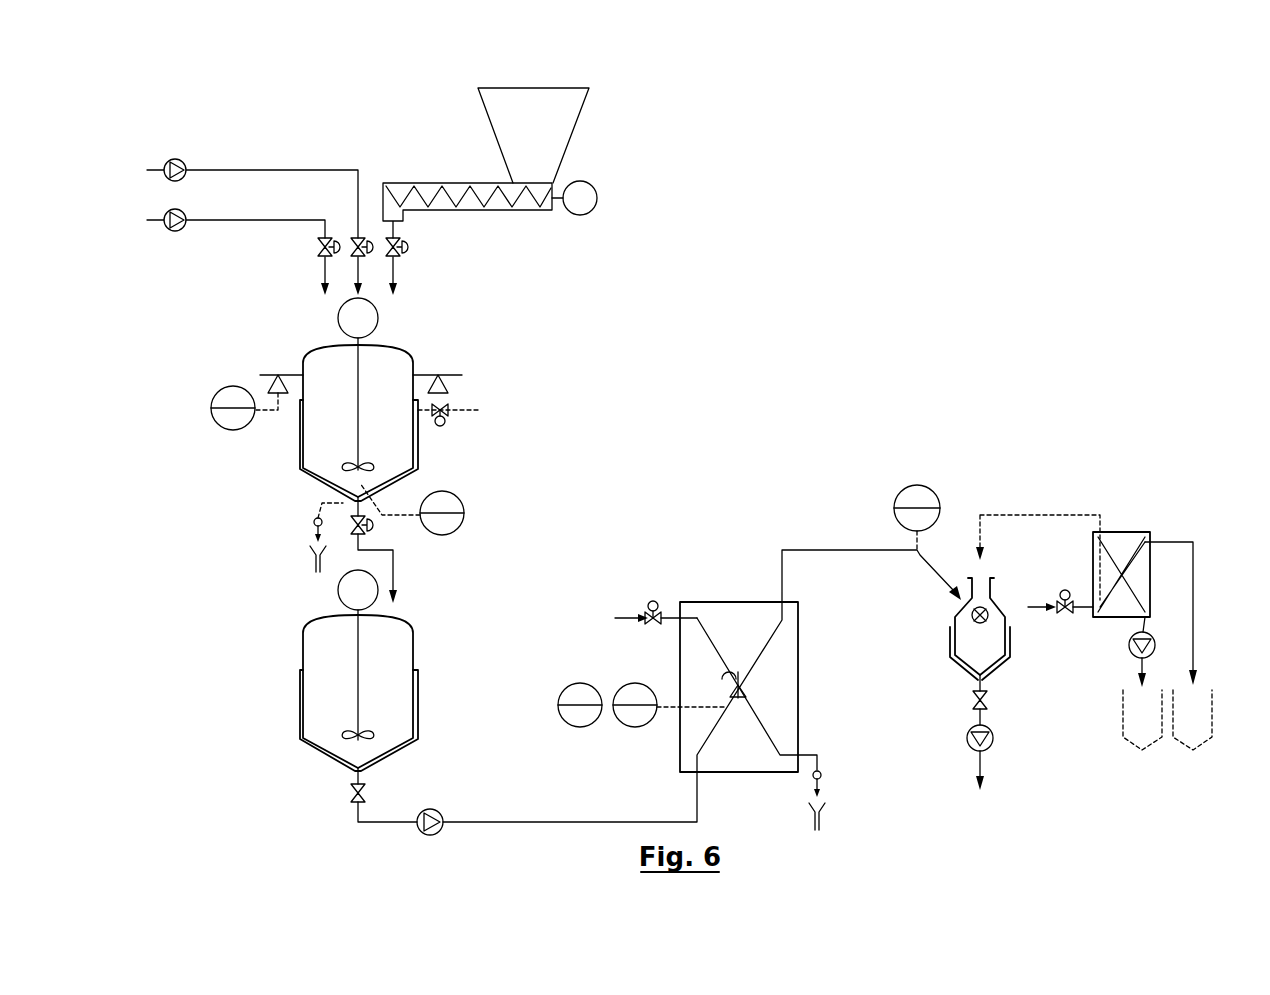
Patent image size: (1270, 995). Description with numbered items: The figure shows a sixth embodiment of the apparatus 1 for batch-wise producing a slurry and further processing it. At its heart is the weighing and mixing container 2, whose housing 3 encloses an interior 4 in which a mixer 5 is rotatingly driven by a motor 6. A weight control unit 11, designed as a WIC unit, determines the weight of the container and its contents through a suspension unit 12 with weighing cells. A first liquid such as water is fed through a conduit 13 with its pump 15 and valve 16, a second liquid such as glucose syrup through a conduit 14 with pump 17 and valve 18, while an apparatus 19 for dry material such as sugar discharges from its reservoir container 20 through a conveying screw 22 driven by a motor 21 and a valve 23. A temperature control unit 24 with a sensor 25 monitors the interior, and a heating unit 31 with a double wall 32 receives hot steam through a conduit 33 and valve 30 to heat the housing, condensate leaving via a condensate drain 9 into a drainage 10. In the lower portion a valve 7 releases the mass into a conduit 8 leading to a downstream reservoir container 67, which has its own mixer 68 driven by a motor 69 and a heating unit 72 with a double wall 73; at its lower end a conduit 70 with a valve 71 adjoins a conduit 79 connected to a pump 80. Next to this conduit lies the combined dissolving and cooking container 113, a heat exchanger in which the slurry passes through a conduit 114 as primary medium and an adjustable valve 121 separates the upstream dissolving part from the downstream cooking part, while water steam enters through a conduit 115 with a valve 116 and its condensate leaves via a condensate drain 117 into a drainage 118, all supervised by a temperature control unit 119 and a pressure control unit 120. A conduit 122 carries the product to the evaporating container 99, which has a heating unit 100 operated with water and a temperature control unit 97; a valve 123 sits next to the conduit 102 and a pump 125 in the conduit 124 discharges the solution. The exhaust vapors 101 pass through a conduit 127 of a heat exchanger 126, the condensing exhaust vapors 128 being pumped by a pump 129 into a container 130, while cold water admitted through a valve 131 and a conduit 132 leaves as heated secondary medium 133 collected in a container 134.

The apparatus 1 is at (879, 204).
The weighing and mixing container 2 is at (384, 332).
The housing 3 is at (303, 363).
The interior 4 is at (262, 375).
The mixer 5 is at (300, 455).
The motor 6 is at (338, 316).
The valve 7 is at (365, 537).
The conduit 8 is at (395, 578).
The condensate drain 9 is at (312, 548).
The drainage 10 is at (314, 565).
The weight control unit 11 is at (218, 423).
The suspension unit 12 is at (270, 387).
The conduit 13 is at (203, 221).
The conduit 14 is at (165, 170).
The pump 15 is at (163, 222).
The valve 16 is at (322, 250).
The pump 17 is at (172, 160).
The valve 18 is at (356, 238).
The apparatus for introducing dry material 19 is at (521, 70).
The reservoir container 20 is at (565, 103).
The motor 21 is at (582, 181).
The conveying screw 22 is at (428, 198).
The valve 23 is at (380, 250).
The temperature control unit 24 is at (455, 528).
The sensor 25 is at (314, 520).
The valve 30 is at (458, 410).
The heating unit 31 is at (300, 436).
The double wall 32 is at (335, 480).
The conduit 33 is at (452, 415).
The reservoir container 67 is at (303, 652).
The mixer 68 is at (345, 734).
The motor 69 is at (338, 592).
The conduit 70 is at (363, 770).
The valve 71 is at (368, 797).
The heating unit 72 is at (312, 740).
The double wall 73 is at (312, 745).
The conduit 79 is at (387, 822).
The pump 80 is at (437, 815).
The temperature control unit 97 is at (917, 485).
The evaporating container 99 is at (997, 598).
The heating unit 100 is at (1012, 637).
The exhaust vapors 101 is at (978, 555).
The conduit 102 is at (985, 685).
The dissolving and cooking container 113 is at (692, 602).
The conduit 114 is at (759, 640).
The conduit 115 is at (708, 633).
The valve 116 is at (651, 612).
The condensate drain 117 is at (820, 772).
The drainage 118 is at (820, 813).
The temperature control unit 119 is at (578, 727).
The pressure control unit 120 is at (637, 727).
The adjustable valve 121 is at (742, 682).
The conduit 122 is at (863, 548).
The valve 123 is at (988, 708).
The conduit 124 is at (972, 790).
The pump 125 is at (992, 752).
The heat exchanger 126 is at (1137, 532).
The conduit 127 is at (1160, 537).
The condensing exhaust vapors 128 is at (1146, 666).
The pump 129 is at (1133, 652).
The container 130 is at (1136, 722).
The valve 131 is at (1073, 590).
The conduit 132 is at (1128, 532).
The heated secondary medium 133 is at (1193, 568).
The container 134 is at (1212, 722).